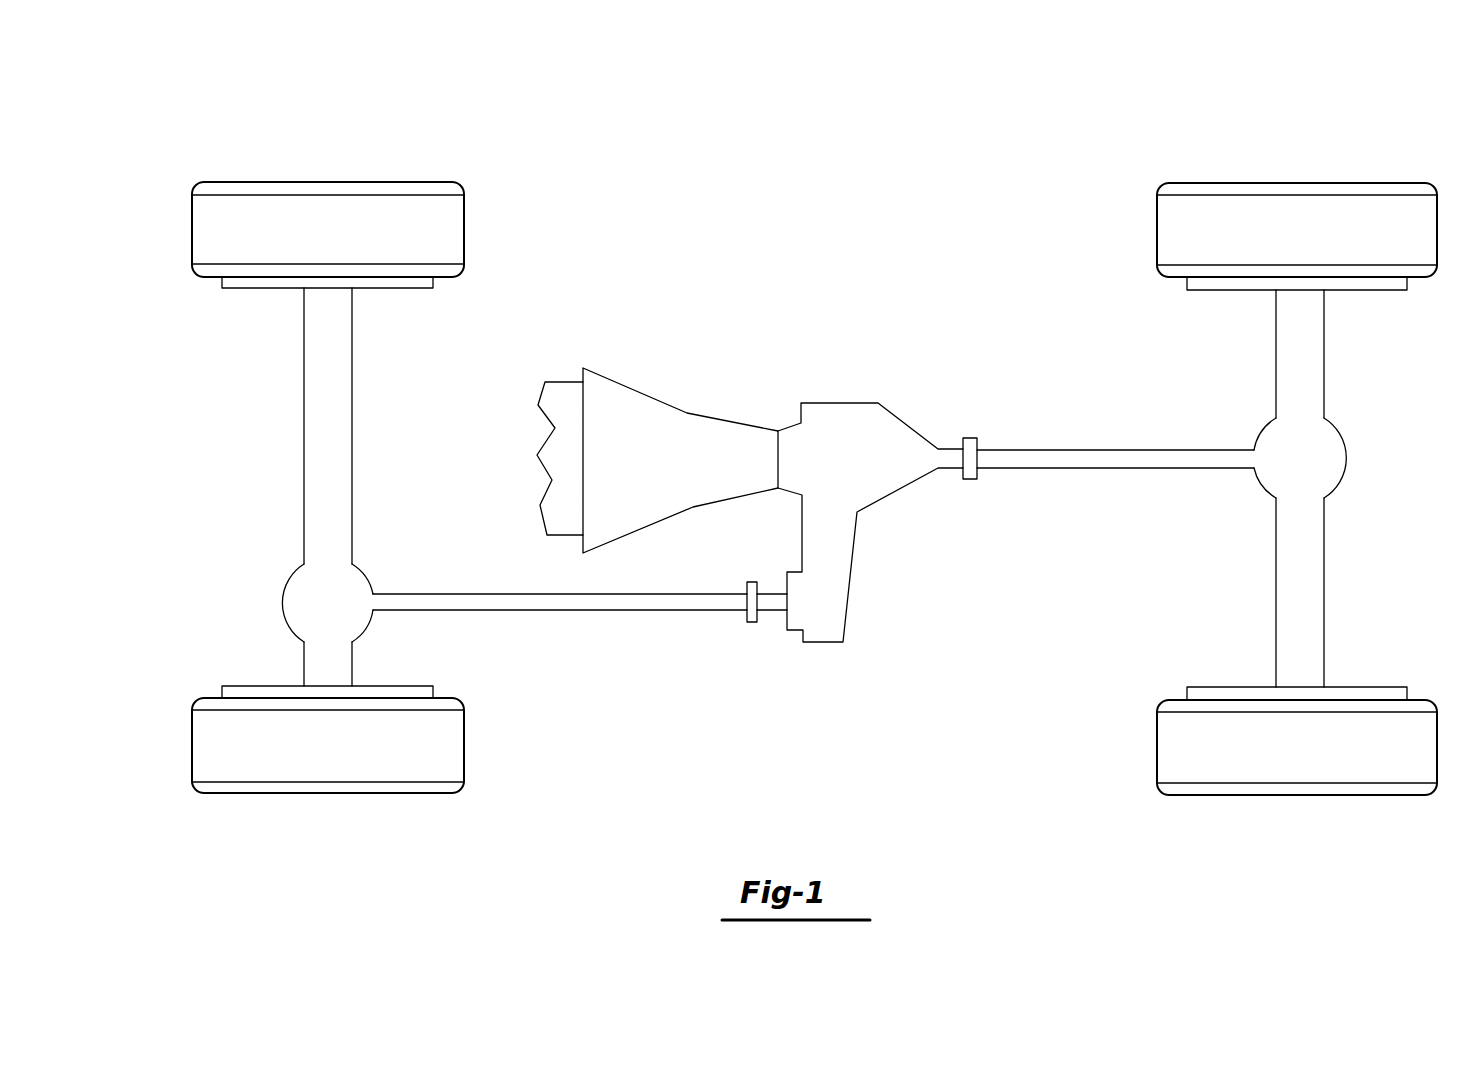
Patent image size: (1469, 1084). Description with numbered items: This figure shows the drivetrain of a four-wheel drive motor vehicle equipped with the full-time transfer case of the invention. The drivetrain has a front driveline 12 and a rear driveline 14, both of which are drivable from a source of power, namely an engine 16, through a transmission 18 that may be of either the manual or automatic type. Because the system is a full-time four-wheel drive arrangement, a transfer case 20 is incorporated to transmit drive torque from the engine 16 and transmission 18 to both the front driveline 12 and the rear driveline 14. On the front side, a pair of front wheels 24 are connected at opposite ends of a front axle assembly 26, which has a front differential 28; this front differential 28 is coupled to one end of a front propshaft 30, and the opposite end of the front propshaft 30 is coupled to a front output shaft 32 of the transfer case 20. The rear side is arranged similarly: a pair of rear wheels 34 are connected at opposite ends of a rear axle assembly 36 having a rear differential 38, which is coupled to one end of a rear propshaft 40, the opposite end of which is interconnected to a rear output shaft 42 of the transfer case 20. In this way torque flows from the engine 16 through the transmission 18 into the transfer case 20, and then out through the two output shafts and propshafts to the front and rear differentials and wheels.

The front driveline 12 is at (378, 479).
The rear driveline 14 is at (1182, 410).
The engine 16 is at (557, 430).
The transmission 18 is at (697, 480).
The transfer case 20 is at (897, 500).
The front wheels 24 is at (257, 227).
The front axle assembly 26 is at (324, 369).
The front differential 28 is at (307, 580).
The front propshaft 30 is at (697, 607).
The front output shaft 32 is at (770, 607).
The rear wheels 34 is at (1237, 245).
The rear axle assembly 36 is at (1292, 346).
The rear differential 38 is at (1317, 452).
The rear propshaft 40 is at (1180, 460).
The rear output shaft 42 is at (953, 457).